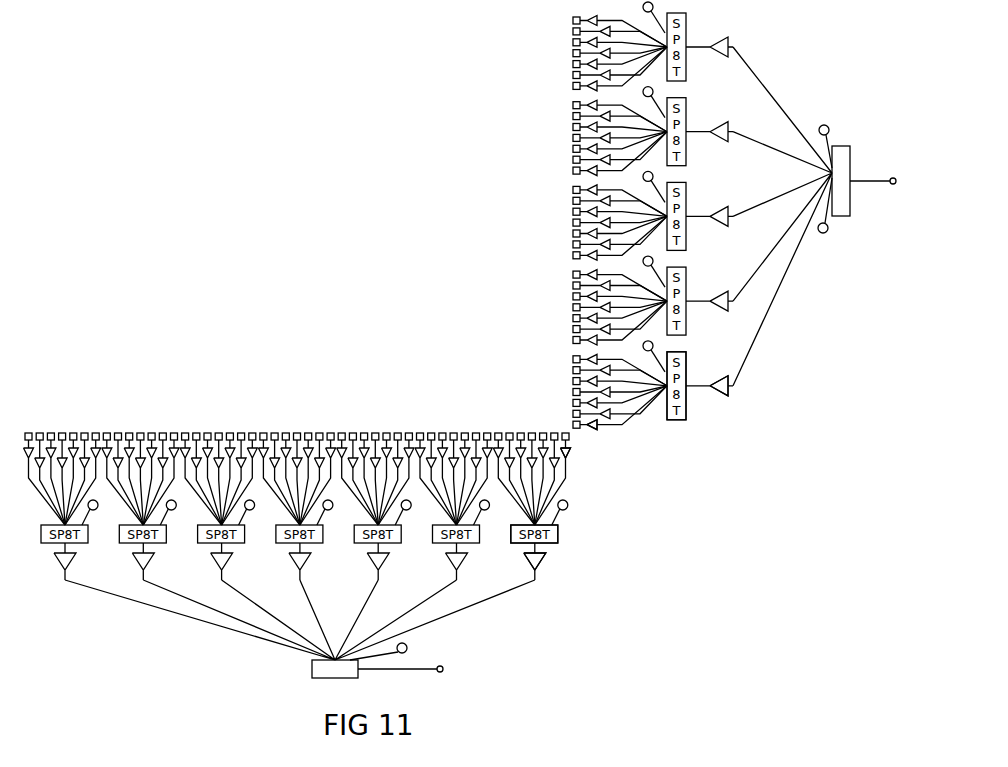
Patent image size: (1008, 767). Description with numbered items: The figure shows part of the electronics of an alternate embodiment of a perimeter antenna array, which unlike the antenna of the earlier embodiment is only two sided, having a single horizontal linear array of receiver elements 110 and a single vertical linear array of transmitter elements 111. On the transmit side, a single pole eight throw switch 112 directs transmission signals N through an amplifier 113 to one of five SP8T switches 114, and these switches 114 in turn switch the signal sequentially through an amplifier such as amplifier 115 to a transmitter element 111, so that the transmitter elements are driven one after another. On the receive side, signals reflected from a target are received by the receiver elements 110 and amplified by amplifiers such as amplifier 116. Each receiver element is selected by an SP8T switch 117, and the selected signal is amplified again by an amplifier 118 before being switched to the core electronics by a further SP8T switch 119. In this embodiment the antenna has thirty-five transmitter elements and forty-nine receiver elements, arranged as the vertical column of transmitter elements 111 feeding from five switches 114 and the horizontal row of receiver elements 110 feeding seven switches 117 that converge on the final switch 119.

The receiver elements 110 is at (118, 433).
The transmitter elements 111 is at (573, 101).
The single pole eight throw switch 112 is at (843, 146).
The amplifier 113 is at (733, 392).
The SP8T switches 114 is at (695, 415).
The amplifier 115 is at (597, 427).
The amplifiers 116 is at (568, 455).
The SP8T switch 117 is at (558, 533).
The amplifier 118 is at (545, 566).
The SP8T switch 119 is at (360, 664).